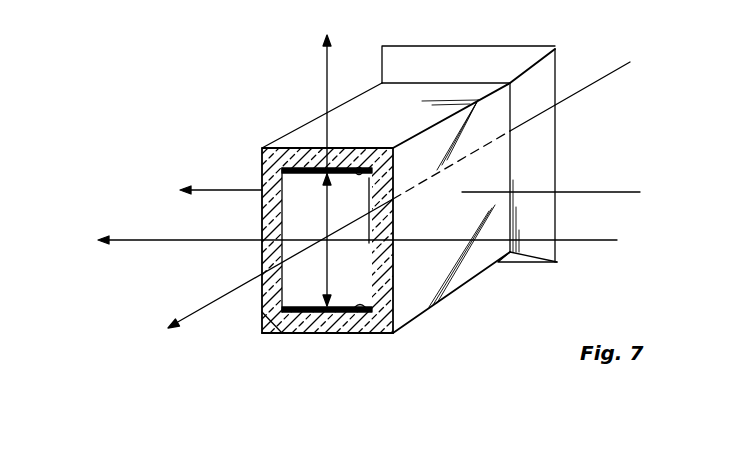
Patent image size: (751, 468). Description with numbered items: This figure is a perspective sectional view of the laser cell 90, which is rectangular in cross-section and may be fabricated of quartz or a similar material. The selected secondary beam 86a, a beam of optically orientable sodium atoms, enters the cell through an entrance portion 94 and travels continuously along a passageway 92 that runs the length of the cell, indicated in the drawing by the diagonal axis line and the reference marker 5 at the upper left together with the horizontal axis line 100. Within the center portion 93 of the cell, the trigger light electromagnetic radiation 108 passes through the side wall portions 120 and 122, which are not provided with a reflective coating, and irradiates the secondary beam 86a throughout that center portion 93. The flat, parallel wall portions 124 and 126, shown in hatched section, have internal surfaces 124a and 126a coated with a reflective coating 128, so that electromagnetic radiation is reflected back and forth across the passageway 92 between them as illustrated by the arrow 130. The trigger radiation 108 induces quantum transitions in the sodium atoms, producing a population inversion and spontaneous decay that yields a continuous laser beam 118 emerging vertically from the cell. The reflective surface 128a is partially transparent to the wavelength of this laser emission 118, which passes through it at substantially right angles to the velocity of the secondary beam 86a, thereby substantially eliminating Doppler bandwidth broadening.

The section view indicator 5 is at (216, 12).
The selected secondary beam 86a is at (212, 303).
The laser cell 90 is at (494, 31).
The passageway 92 is at (526, 37).
The center portion 93 is at (467, 282).
The entrance portion 94 is at (558, 138).
The horizontal axis 100 is at (602, 192).
The trigger light electromagnetic radiation 108 is at (573, 240).
The laser beam 118 is at (327, 76).
The side wall portion 120 is at (413, 305).
The side wall portion 122 is at (252, 167).
The wall portion 124 is at (387, 97).
The internal surface 124a is at (292, 190).
The wall portion 126 is at (321, 333).
The internal surface 126a is at (293, 313).
The reflective coating 128 is at (360, 170).
The reflective surface 128a is at (283, 180).
The arrow 130 is at (347, 240).